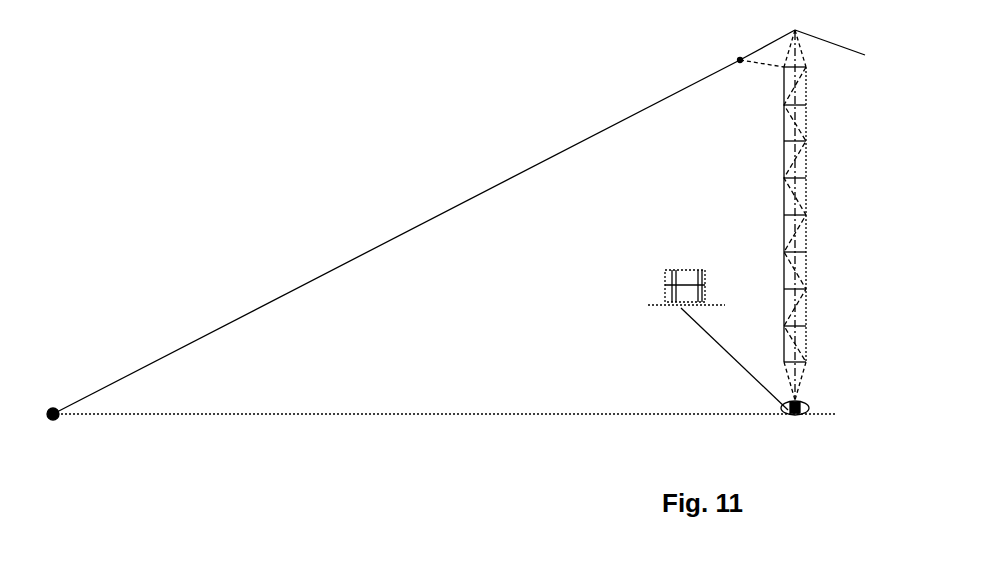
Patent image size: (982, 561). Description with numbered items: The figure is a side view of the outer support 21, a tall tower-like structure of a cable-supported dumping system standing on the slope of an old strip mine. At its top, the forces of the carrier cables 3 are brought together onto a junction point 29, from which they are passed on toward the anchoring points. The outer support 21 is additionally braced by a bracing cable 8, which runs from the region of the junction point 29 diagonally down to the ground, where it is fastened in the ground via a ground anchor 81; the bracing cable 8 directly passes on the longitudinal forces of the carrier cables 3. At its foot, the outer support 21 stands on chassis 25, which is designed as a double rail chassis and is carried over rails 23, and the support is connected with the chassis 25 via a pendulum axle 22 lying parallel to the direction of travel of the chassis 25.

The carrier cable 3 is at (822, 44).
The bracing cable 8 is at (460, 204).
The outer support 21 is at (806, 160).
The pendulum axle 22 is at (801, 404).
The rail 23 is at (797, 414).
The chassis 25 is at (686, 278).
The junction point 29 is at (738, 58).
The ground anchor 81 is at (58, 406).